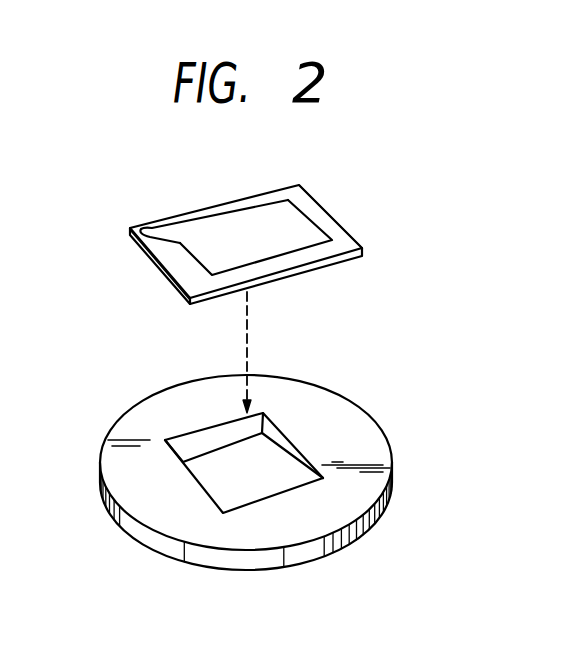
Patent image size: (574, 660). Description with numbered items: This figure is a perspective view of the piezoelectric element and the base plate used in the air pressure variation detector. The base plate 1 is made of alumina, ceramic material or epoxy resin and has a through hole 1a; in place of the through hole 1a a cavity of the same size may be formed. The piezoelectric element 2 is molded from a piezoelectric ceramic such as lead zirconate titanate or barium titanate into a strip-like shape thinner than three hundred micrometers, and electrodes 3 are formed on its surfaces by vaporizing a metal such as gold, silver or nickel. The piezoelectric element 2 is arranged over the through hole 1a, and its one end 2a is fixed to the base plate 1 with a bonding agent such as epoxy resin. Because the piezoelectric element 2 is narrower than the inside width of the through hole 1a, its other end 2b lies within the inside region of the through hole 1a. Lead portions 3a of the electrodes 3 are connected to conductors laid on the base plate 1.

The base plate 1 is at (269, 472).
The through hole 1a is at (212, 493).
The piezoelectric element 2 is at (255, 226).
The one end of the piezoelectric element 2a is at (158, 250).
The other end of the piezoelectric element 2b is at (315, 207).
The electrodes 3 is at (225, 211).
The lead portions 3a is at (158, 234).